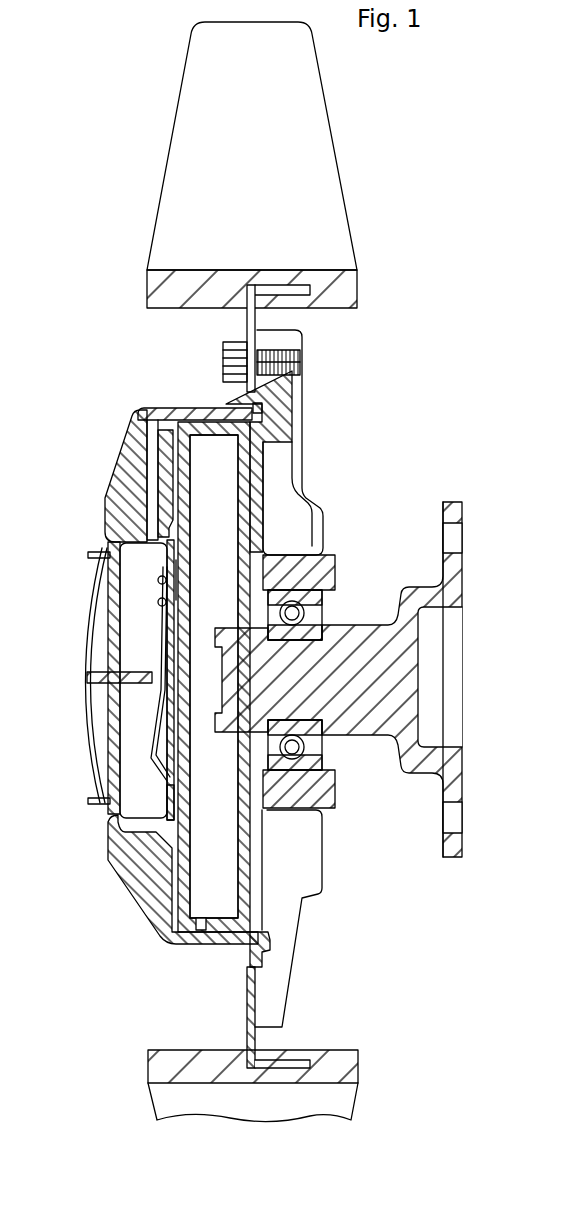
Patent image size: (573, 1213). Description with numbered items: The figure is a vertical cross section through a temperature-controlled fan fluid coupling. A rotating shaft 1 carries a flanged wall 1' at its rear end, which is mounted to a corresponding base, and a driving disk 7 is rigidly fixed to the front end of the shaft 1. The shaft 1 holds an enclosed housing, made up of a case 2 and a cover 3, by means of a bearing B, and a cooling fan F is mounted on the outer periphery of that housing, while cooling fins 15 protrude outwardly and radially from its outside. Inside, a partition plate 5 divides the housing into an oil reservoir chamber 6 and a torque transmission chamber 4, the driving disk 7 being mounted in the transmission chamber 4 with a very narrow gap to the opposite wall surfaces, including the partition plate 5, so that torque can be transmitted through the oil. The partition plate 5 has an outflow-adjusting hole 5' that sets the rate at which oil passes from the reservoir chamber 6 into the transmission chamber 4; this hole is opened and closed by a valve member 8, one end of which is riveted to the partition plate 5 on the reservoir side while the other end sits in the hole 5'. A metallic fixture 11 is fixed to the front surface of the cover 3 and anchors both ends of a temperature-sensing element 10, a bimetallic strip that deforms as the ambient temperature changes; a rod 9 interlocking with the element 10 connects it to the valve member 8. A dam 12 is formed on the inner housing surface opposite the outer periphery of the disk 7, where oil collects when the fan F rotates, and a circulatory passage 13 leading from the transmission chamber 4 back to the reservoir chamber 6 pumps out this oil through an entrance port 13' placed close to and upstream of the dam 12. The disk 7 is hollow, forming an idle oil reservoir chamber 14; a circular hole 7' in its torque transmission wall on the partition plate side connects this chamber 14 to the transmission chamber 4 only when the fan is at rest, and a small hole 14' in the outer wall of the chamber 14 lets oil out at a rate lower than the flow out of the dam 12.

The cooling fan F is at (323, 152).
The rotating shaft 1 is at (338, 679).
The flanged wall 1' is at (463, 679).
The case 2 is at (258, 840).
The cover 3 is at (167, 862).
The torque transmission chamber 4 is at (252, 502).
The partition plate 5 is at (151, 680).
The outflow-adjusting hole 5' is at (190, 802).
The oil reservoir chamber 6 is at (137, 593).
The driving disk 7 is at (261, 677).
The circular hole 7' is at (192, 578).
The valve member 8 is at (158, 710).
The rod 9 is at (92, 677).
The temperature-sensing element 10 is at (82, 632).
The metallic fixture 11 is at (93, 552).
The dam 12 is at (263, 410).
The circulatory passage 13 is at (121, 483).
The entrance port 13' is at (127, 454).
The idle oil reservoir chamber 14 is at (276, 676).
The small hole 14' is at (205, 947).
The cooling fins 15 is at (300, 440).
The bearing B is at (321, 742).